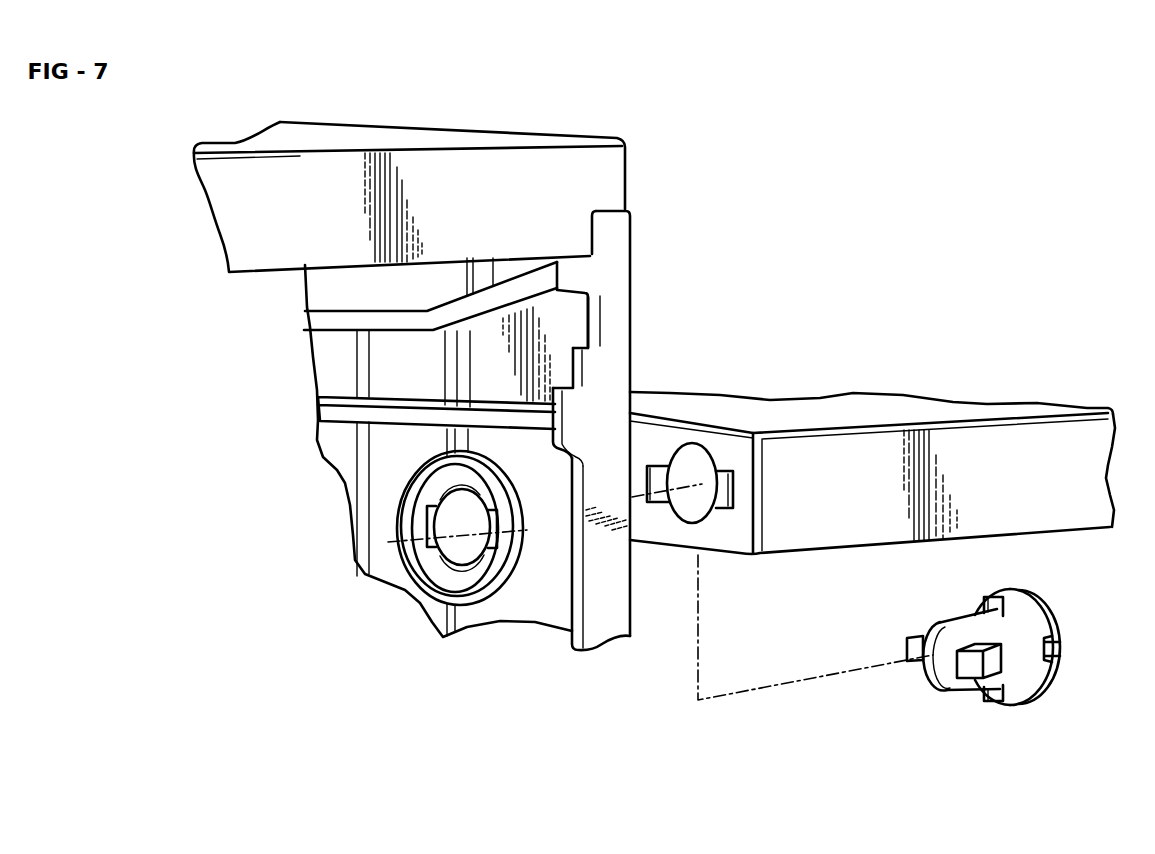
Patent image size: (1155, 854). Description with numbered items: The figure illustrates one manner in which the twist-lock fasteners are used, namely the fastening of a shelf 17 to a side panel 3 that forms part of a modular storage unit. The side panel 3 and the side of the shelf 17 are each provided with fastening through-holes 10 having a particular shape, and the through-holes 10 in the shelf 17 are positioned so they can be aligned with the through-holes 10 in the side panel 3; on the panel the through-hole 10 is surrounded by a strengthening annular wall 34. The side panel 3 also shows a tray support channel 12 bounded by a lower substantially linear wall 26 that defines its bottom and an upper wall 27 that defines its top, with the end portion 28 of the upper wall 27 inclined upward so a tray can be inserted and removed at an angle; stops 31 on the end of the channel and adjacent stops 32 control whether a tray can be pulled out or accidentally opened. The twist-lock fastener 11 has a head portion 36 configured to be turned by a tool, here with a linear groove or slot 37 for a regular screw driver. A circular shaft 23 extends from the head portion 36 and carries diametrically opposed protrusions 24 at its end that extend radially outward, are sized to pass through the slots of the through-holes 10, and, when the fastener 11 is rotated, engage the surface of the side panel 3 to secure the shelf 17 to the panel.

The side panel 3 is at (617, 275).
The fastening through-hole 10 is at (498, 180).
The twist-lock fastener 11 is at (991, 662).
The tray support channel 12 is at (557, 331).
The shelf 17 is at (997, 407).
The circular shaft 23 is at (978, 622).
The protrusion 24 is at (918, 640).
The lower wall 26 is at (423, 403).
The upper wall 27 is at (407, 320).
The end portion 28 is at (447, 308).
The stop 31 is at (590, 361).
The stop 32 is at (572, 406).
The annular wall 34 is at (515, 499).
The head portion 36 is at (1053, 627).
The slot 37 is at (1058, 649).